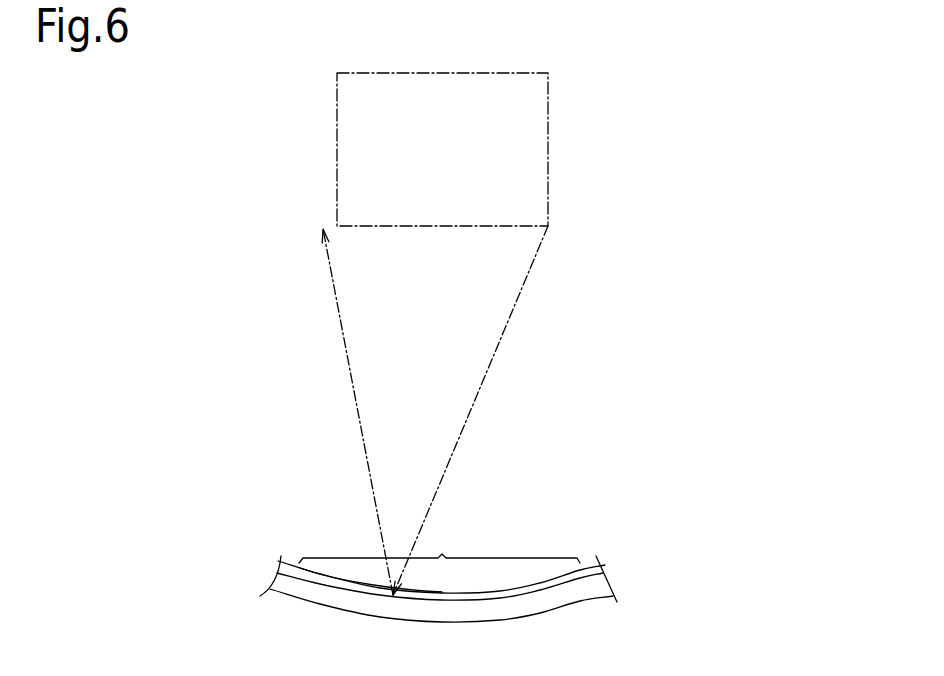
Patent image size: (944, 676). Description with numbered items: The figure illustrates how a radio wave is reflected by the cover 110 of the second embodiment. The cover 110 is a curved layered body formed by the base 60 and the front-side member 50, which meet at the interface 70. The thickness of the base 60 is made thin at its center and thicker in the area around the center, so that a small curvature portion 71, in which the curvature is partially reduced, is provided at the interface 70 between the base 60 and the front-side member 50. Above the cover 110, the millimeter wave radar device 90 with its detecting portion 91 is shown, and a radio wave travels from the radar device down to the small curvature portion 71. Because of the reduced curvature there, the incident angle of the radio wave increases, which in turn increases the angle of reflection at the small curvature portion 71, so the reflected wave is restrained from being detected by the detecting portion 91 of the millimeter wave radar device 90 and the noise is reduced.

The front-side member 50 is at (604, 585).
The base 60 is at (600, 572).
The interface 70 is at (582, 568).
The small curvature portion 71 is at (439, 541).
The millimeter wave radar device 90 is at (514, 149).
The detecting portion 91 is at (548, 149).
The cover 110 is at (438, 579).